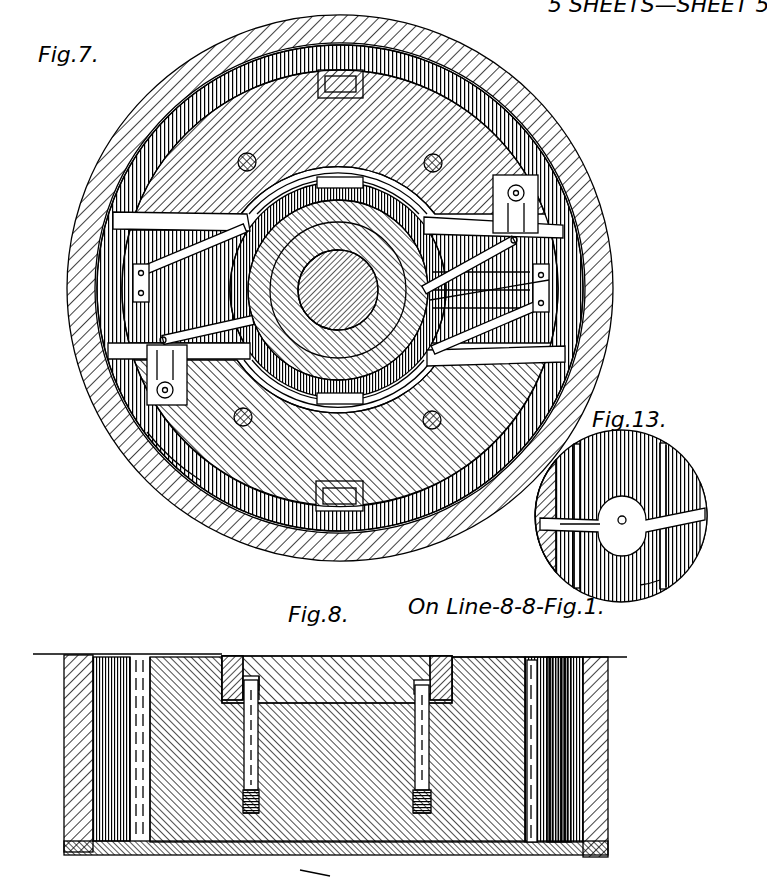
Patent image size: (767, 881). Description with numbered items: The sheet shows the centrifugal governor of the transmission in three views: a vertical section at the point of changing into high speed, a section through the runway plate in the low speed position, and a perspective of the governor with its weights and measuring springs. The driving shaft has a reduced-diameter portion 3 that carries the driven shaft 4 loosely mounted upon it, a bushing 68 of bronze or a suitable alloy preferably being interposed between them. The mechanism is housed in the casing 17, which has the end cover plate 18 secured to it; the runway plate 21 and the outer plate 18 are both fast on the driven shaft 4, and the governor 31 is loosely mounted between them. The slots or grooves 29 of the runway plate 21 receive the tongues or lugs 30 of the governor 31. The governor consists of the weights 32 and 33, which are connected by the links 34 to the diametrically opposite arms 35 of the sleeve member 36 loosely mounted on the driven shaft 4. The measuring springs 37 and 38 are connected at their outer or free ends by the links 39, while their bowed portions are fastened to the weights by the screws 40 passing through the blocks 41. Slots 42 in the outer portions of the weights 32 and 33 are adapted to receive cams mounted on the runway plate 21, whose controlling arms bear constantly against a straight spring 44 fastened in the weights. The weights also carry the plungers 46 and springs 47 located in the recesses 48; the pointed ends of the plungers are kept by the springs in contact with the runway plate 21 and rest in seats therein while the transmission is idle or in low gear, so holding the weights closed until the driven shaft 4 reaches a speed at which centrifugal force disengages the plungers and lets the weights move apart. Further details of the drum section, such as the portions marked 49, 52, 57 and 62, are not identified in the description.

In FIG. 7, the reduced-diameter portion of the driving shaft 3 is at (338, 290).
In FIG. 7, the driven shaft 4 is at (338, 248).
In FIG. 7, the casing 17 is at (121, 128).
In FIG. 8, the casing 17 is at (64, 711).
In FIG. 8, the end cover plate 18 is at (560, 850).
In FIG. 8, the runway plate 21 is at (403, 650).
In FIG. 8, the slots or grooves 29 is at (237, 657).
In FIG. 13, the tongues or lugs 30 is at (600, 462).
In FIG. 8, the tongues or lugs 30 is at (245, 657).
In FIG. 7, the governor 31 is at (147, 432).
In FIG. 13, the governor 31 is at (548, 548).
In FIG. 7, the weight 32 is at (340, 142).
In FIG. 13, the weight 32 is at (620, 521).
In FIG. 7, the weight 33 is at (340, 433).
In FIG. 7, the links 34 is at (525, 200).
In FIG. 7, the arms 35 is at (460, 265).
In FIG. 7, the sleeve member 36 is at (505, 330).
In FIG. 7, the measuring spring 37 is at (290, 192).
In FIG. 13, the measuring spring 37 is at (622, 526).
In FIG. 7, the measuring spring 38 is at (267, 388).
In FIG. 13, the measuring spring 38 is at (588, 527).
In FIG. 7, the links 39 is at (133, 283).
In FIG. 13, the links 39 is at (536, 530).
In FIG. 7, the screws 40 is at (343, 170).
In FIG. 8, the screws 40 is at (430, 733).
In FIG. 7, the blocks 41 is at (355, 172).
In FIG. 13, the blocks 41 is at (624, 516).
In FIG. 7, the slots 42 is at (413, 30).
In FIG. 13, the slots 42 is at (645, 586).
In FIG. 7, the straight spring 44 is at (365, 78).
In FIG. 7, the plungers 46 is at (239, 160).
In FIG. 8, the plungers 46 is at (248, 740).
In FIG. 8, the springs 47 is at (246, 794).
In FIG. 8, the recesses 48 is at (256, 680).
In FIG. 8, the lock nut 49 is at (260, 804).
In FIG. 7, the shoe body 52 is at (230, 125).
In FIG. 8, the shoe body 52 is at (338, 749).
In FIG. 8, the drum rim 57 is at (219, 868).
In FIG. 8, the drum web 62 is at (298, 869).
In FIG. 7, the bushing 68 is at (540, 270).